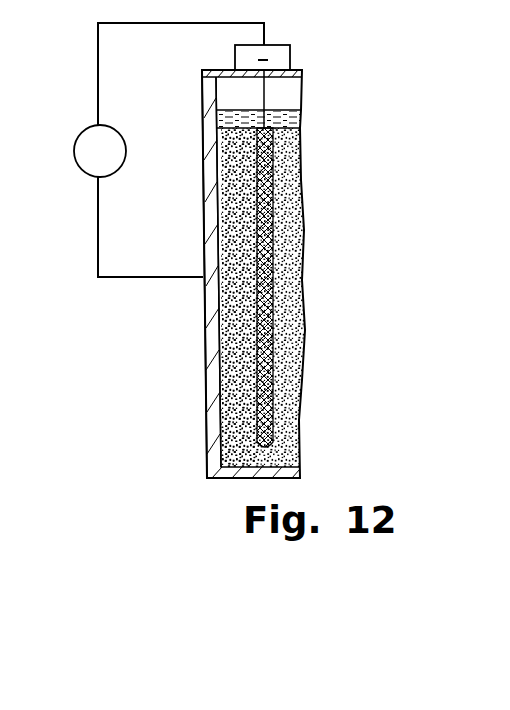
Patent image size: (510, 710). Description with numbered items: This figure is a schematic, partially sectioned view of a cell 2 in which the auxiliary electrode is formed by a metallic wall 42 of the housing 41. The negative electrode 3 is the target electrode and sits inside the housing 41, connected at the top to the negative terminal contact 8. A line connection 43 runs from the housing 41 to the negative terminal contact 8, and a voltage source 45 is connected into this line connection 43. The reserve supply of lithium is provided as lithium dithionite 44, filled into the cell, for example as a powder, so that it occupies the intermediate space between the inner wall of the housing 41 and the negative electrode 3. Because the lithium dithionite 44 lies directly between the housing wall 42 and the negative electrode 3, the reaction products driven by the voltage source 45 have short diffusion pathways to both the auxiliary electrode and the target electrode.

The cell 2 is at (191, 256).
The negative electrode 3 is at (305, 193).
The negative terminal contact 8 is at (278, 45).
The housing 41 is at (193, 334).
The metallic wall 42 is at (215, 378).
The line connection 43 is at (98, 95).
The lithium dithionite 44 is at (232, 423).
The voltage source 45 is at (83, 168).